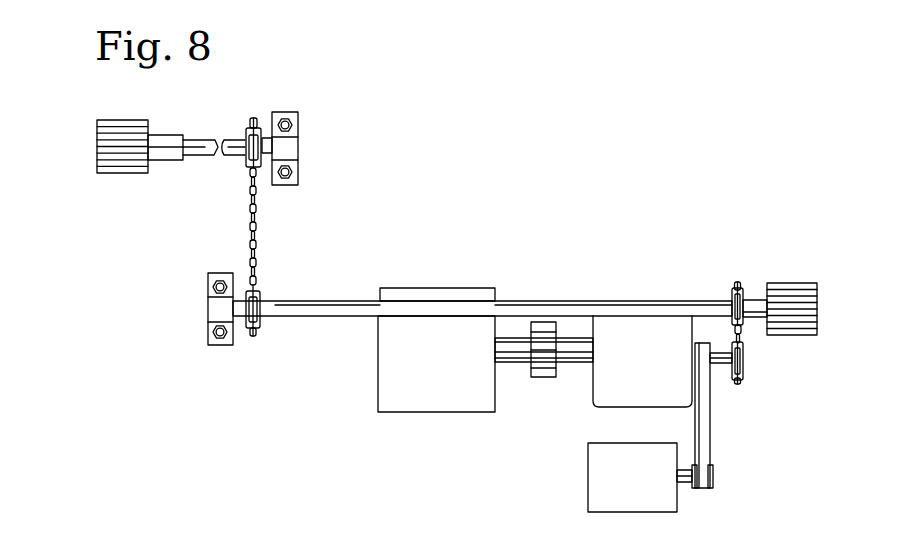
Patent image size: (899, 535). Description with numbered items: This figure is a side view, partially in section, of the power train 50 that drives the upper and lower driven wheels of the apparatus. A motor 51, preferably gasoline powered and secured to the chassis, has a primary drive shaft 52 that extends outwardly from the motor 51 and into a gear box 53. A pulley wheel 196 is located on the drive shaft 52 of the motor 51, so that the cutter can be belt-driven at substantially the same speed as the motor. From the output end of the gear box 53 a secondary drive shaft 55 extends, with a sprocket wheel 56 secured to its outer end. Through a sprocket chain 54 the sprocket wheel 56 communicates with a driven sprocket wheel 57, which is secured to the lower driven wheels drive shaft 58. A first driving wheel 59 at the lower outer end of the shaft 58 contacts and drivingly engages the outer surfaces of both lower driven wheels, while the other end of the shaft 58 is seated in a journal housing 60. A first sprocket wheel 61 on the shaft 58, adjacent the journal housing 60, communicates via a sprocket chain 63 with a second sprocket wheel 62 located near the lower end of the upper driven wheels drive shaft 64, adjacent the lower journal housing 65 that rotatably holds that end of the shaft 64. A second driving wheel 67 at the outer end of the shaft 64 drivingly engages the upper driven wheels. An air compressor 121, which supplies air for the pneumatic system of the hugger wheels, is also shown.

The power train 50 is at (750, 107).
The motor 51 is at (447, 371).
The primary drive shaft 52 is at (523, 363).
The gear box 53 is at (650, 372).
The sprocket chain 54 is at (743, 330).
The secondary drive shaft 55 is at (716, 370).
The sprocket wheel 56 is at (745, 367).
The driven sprocket wheel 57 is at (730, 295).
The lower driven wheels drive shaft 58 is at (353, 300).
The first driving wheel 59 is at (818, 311).
The journal housing 60 is at (213, 310).
The first sprocket wheel 61 is at (260, 322).
The second sprocket wheel 62 is at (260, 133).
The sprocket chain 63 is at (258, 252).
The upper driven wheels drive shaft 64 is at (192, 132).
The lower journal housing 65 is at (300, 152).
The second driving wheel 67 is at (123, 173).
The air compressor 121 is at (655, 492).
The pulley wheel 196 is at (542, 377).